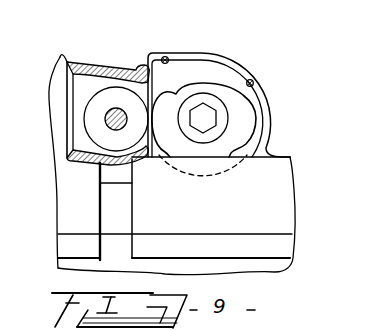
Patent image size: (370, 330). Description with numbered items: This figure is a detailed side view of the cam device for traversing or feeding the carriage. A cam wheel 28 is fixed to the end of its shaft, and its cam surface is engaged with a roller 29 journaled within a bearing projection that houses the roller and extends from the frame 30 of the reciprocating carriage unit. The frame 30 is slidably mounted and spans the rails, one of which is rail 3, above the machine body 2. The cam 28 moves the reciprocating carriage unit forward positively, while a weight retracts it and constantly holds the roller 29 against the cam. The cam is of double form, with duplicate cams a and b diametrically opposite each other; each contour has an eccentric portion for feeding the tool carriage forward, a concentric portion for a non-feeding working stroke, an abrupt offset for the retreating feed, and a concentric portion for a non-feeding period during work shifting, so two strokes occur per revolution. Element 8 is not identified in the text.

The frame 30 is at (64, 58).
The roller 29 is at (108, 97).
The cam wheel 28 is at (197, 88).
The cam a is at (162, 114).
The cam b is at (238, 112).
The base block 8 is at (290, 156).
The rail 3 is at (116, 209).
The machine body 2 is at (175, 251).